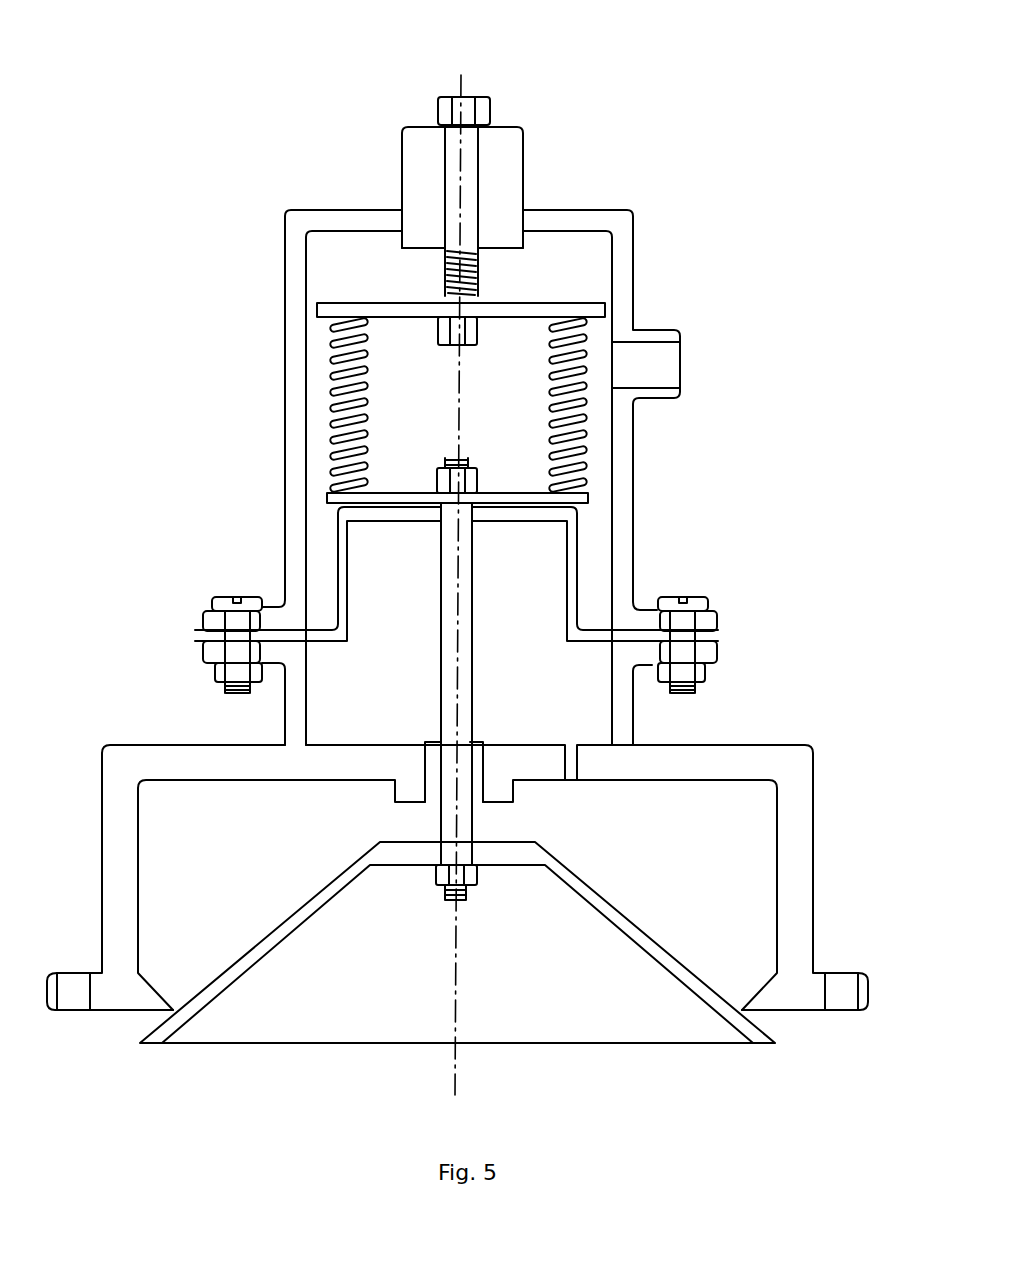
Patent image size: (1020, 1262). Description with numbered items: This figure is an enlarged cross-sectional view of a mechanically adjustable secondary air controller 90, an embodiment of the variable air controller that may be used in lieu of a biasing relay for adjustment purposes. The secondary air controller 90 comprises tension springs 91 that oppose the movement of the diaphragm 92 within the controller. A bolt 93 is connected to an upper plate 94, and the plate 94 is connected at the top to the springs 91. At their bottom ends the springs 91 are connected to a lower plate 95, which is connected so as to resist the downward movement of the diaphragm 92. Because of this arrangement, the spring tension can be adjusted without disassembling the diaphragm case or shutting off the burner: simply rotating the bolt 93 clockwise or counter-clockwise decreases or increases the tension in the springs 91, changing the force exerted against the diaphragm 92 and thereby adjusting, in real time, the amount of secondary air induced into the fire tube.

The secondary air controller 90 is at (217, 463).
The tension springs 91 is at (585, 352).
The diaphragm 92 is at (580, 553).
The bolt 93 is at (490, 100).
The plate 94 is at (562, 303).
The plate 95 is at (588, 502).